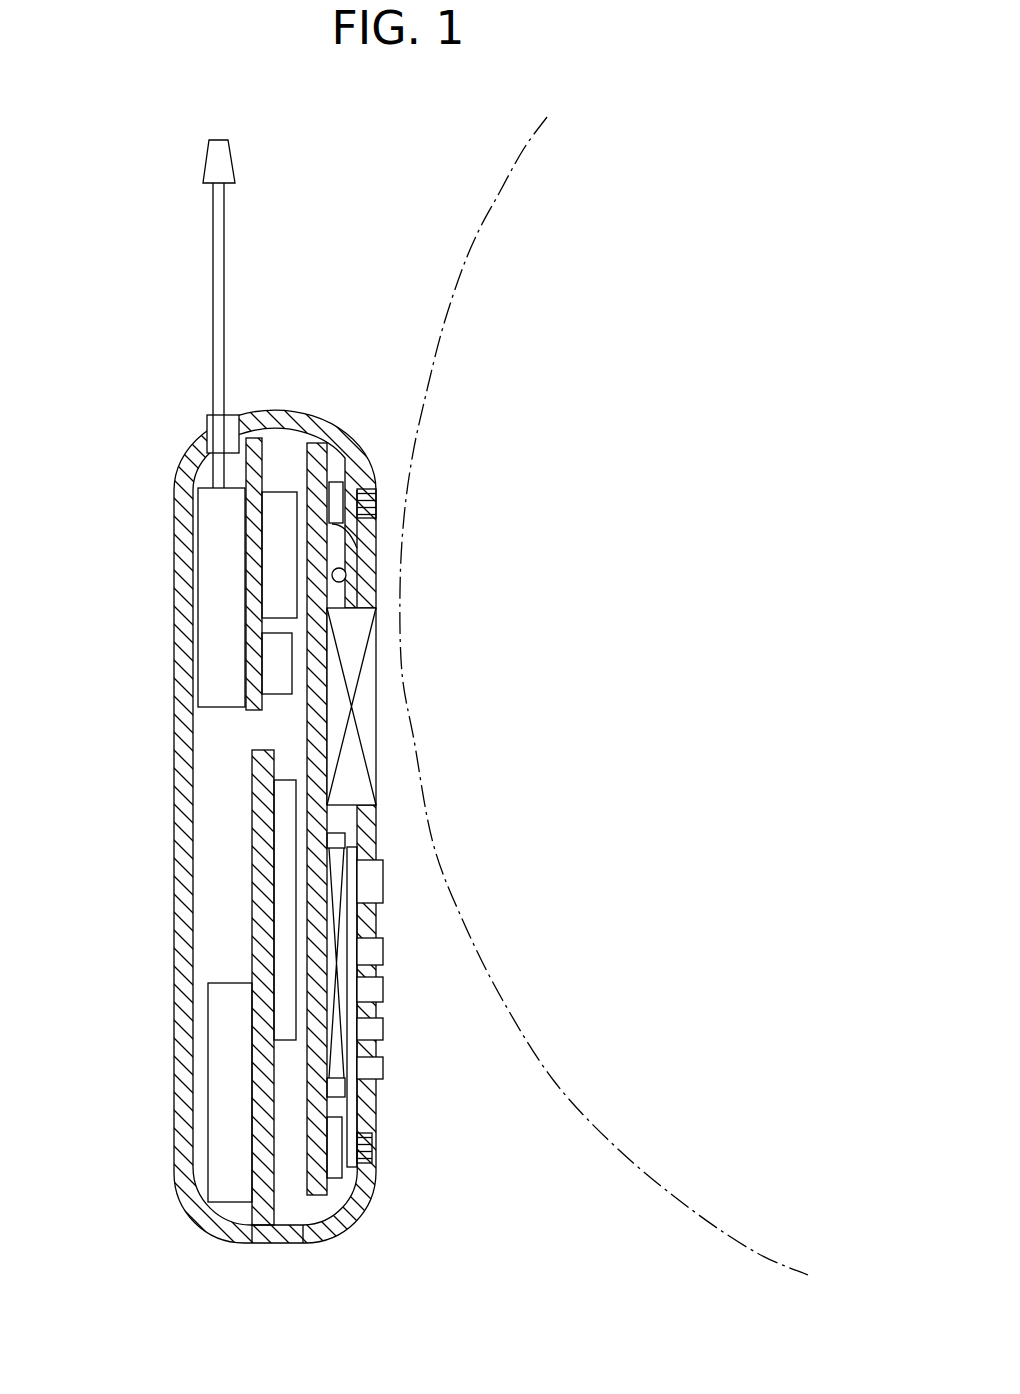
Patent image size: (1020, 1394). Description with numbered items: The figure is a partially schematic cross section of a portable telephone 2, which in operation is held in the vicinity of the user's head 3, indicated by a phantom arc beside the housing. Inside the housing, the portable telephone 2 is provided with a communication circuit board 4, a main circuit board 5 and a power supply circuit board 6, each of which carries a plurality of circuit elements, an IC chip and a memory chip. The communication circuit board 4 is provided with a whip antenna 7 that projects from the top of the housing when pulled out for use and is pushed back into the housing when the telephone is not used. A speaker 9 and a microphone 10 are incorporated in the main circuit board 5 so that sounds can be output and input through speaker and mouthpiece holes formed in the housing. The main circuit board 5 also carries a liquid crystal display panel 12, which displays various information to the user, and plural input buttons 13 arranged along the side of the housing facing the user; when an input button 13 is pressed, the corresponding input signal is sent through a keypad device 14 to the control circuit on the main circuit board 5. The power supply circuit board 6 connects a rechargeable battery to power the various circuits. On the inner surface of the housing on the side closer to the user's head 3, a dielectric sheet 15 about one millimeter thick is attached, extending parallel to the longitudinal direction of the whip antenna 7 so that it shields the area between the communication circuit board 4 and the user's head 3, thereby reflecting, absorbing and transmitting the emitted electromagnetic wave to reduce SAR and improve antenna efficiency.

The portable telephone 2 is at (158, 729).
The user's head 3 is at (480, 228).
The communication circuit board 4 is at (253, 457).
The main circuit board 5 is at (307, 458).
The power supply circuit board 6 is at (275, 1197).
The whip antenna 7 is at (212, 260).
The speaker 9 is at (355, 546).
The microphone 10 is at (340, 1180).
The liquid crystal display panel 12 is at (376, 715).
The input buttons 13 is at (402, 1031).
The keypad device 14 is at (345, 1103).
The dielectric sheet 15 is at (358, 588).